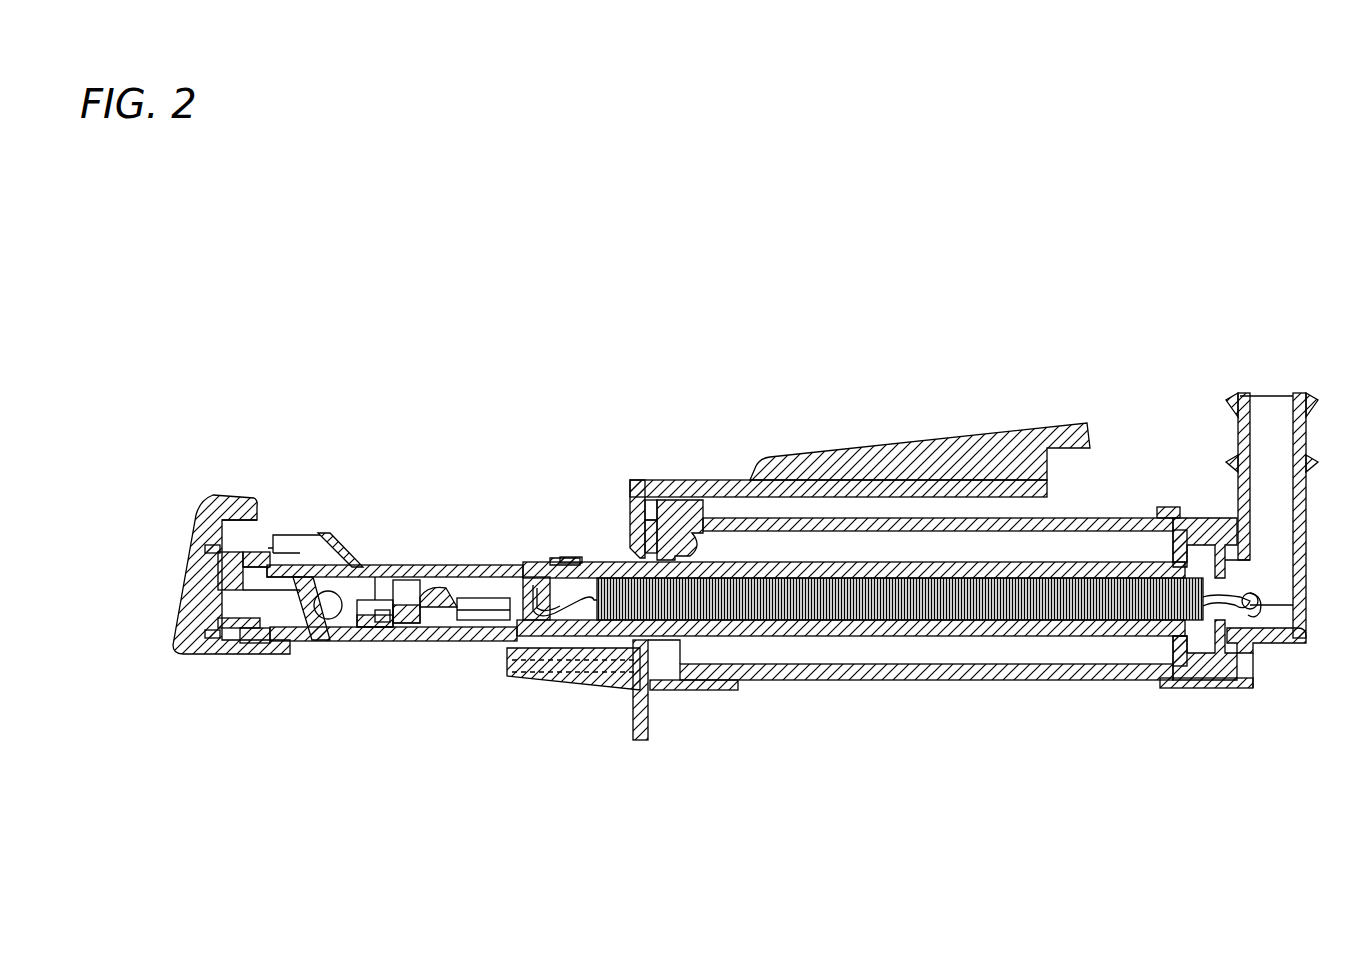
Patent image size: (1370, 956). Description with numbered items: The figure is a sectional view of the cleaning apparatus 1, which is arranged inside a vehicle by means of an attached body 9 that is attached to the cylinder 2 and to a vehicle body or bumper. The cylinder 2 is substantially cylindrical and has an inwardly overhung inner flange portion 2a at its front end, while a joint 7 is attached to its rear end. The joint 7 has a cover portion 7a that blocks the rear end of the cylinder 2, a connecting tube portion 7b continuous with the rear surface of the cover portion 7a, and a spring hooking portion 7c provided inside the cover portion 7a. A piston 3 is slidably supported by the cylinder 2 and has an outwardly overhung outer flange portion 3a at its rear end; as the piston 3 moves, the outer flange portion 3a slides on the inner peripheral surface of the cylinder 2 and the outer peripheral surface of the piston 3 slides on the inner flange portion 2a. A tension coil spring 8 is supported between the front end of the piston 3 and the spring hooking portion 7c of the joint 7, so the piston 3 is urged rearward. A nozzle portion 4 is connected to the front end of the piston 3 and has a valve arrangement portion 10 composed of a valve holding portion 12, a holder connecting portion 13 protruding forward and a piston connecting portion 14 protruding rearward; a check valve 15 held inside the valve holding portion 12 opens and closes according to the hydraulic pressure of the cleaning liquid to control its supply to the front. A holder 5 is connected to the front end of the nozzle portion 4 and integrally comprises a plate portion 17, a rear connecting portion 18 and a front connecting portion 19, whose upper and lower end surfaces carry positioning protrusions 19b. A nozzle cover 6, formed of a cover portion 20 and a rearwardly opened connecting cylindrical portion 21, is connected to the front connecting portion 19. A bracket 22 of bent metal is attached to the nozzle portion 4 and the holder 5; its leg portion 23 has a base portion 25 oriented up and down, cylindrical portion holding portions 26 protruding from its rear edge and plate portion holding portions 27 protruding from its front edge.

The cleaning apparatus 1 is at (440, 270).
The cylinder 2 is at (1075, 522).
The inner flange portion 2a is at (670, 558).
The piston 3 is at (1108, 562).
The outer flange portion 3a is at (1145, 530).
The nozzle portion 4 is at (486, 563).
The holder 5 is at (252, 546).
The nozzle cover 6 is at (230, 496).
The joint 7 is at (1272, 643).
The cover portion 7a is at (1190, 689).
The connecting tube portion 7b is at (1290, 436).
The spring hooking portion 7c is at (1262, 606).
The tension coil spring 8 is at (1245, 603).
The attached body 9 is at (936, 446).
The valve arrangement portion 10 is at (567, 560).
The valve holding portion 12 is at (465, 562).
The holder connecting portion 13 is at (353, 566).
The piston connecting portion 14 is at (576, 560).
The check valve 15 is at (480, 562).
The plate portion 17 is at (316, 552).
The rear connecting portion 18 is at (376, 562).
The front connecting portion 19 is at (247, 634).
The positioning protrusions 19b is at (212, 552).
The cover portion 20 is at (250, 518).
The connecting cylindrical portion 21 is at (262, 540).
The bracket 22 is at (437, 562).
The leg portion 23 is at (452, 562).
The base portion 25 is at (327, 560).
The cylindrical portion holding portions 26 is at (380, 625).
The plate portion holding portions 27 is at (305, 641).